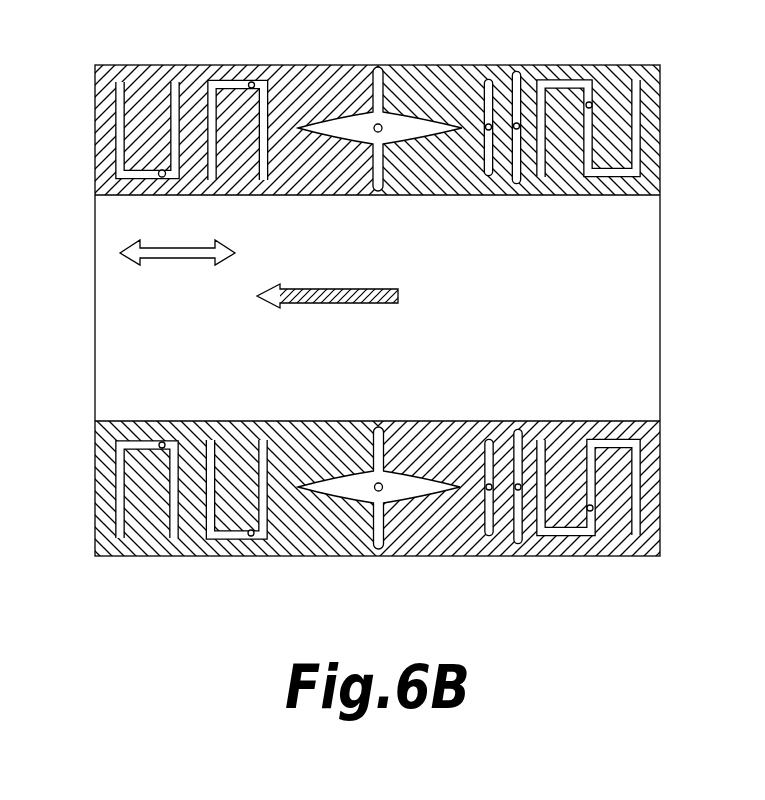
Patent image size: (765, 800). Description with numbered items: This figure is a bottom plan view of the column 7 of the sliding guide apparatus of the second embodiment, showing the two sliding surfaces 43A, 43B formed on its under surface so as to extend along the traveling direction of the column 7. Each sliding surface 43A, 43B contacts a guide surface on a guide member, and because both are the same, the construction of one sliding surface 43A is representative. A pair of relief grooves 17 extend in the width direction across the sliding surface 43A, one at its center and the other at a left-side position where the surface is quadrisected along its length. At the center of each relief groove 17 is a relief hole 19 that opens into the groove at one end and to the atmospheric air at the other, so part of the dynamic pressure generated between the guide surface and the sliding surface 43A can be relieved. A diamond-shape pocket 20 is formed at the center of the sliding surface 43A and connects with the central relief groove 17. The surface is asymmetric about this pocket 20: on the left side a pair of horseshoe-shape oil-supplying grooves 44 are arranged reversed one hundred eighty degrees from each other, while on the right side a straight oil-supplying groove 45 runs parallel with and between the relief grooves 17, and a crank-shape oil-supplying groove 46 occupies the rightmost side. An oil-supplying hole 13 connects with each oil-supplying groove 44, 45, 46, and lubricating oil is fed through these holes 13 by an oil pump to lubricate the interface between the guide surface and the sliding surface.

The column 7 is at (95, 294).
The oil-supplying holes 13 is at (252, 85).
The relief grooves 17 is at (384, 72).
The relief hole 19 is at (381, 135).
The diamond-shape pocket 20 is at (333, 128).
The sliding surface 43A is at (165, 65).
The sliding surface 43B is at (284, 556).
The horseshoe-shape oil-supplying grooves 44 is at (238, 83).
The straight oil-supplying groove 45 is at (487, 80).
The crank-shape oil-supplying groove 46 is at (576, 82).